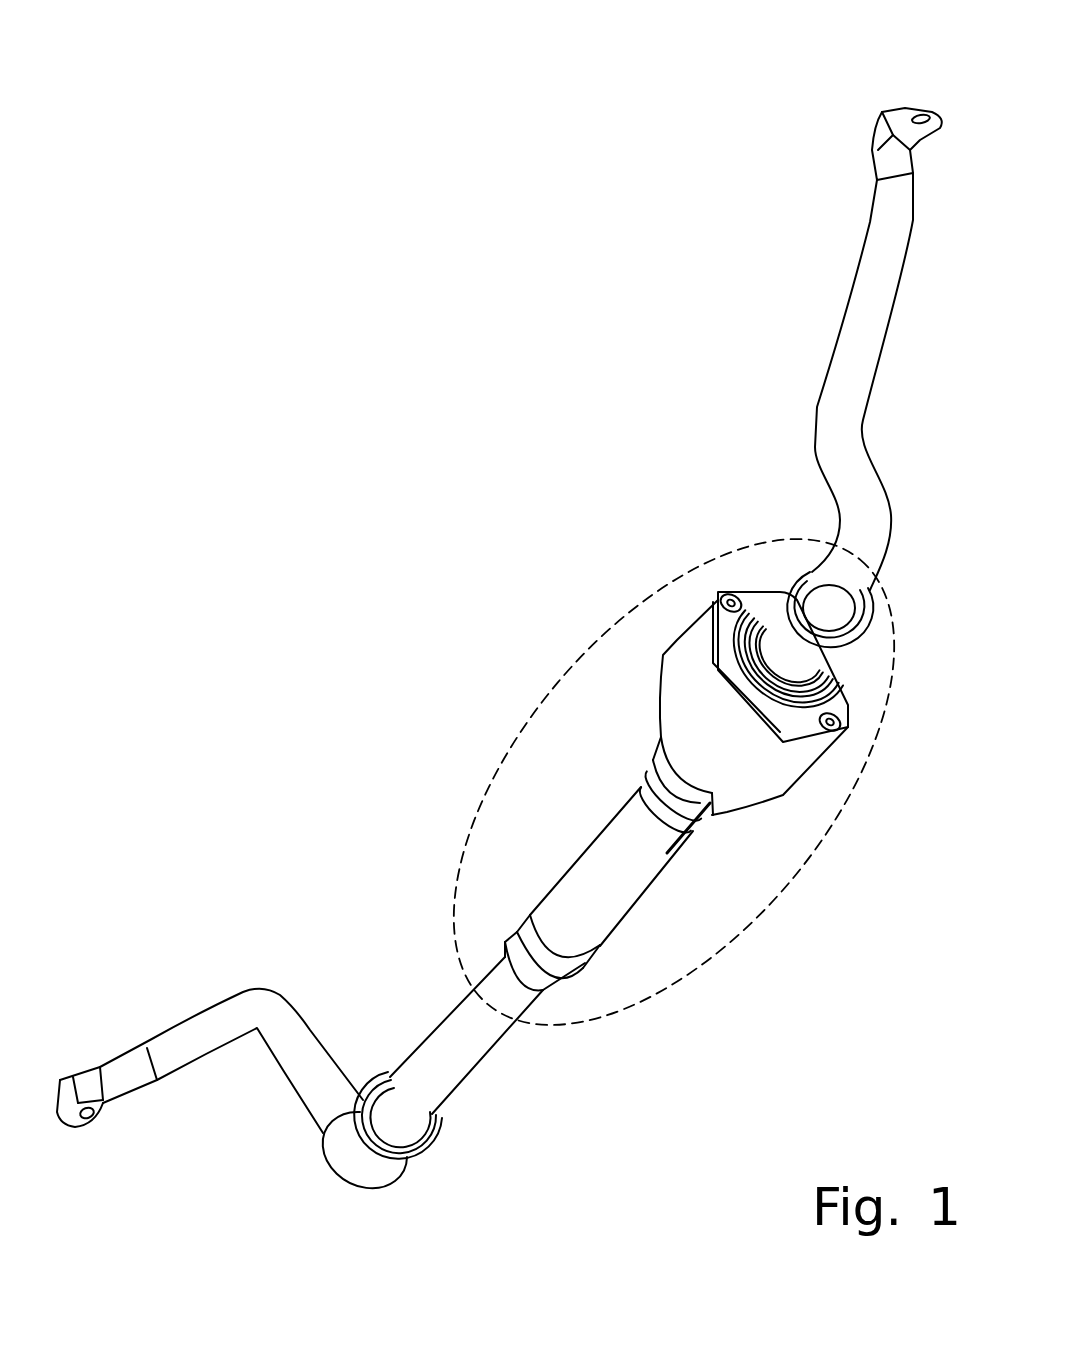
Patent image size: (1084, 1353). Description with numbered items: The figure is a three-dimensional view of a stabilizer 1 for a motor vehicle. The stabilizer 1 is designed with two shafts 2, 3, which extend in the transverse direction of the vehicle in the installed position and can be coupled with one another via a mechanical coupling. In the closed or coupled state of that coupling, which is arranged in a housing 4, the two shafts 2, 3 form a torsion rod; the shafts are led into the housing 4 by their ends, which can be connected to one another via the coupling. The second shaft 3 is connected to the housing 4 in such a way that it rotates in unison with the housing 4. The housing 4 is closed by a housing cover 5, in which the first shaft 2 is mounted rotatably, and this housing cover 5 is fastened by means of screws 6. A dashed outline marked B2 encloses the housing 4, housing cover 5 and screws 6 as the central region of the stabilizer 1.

The stabilizer 1 is at (466, 436).
The first shaft 2 is at (842, 290).
The second shaft 3 is at (181, 1008).
The housing 4 is at (667, 636).
The housing cover 5 is at (755, 600).
The screws 6 is at (732, 592).
The detail region B2 is at (469, 822).